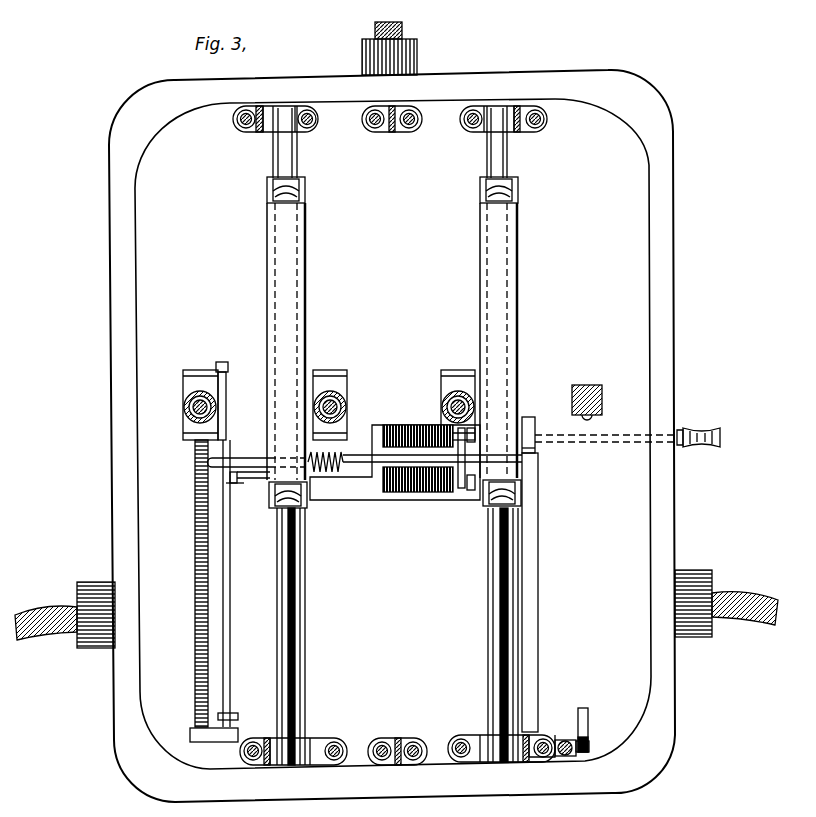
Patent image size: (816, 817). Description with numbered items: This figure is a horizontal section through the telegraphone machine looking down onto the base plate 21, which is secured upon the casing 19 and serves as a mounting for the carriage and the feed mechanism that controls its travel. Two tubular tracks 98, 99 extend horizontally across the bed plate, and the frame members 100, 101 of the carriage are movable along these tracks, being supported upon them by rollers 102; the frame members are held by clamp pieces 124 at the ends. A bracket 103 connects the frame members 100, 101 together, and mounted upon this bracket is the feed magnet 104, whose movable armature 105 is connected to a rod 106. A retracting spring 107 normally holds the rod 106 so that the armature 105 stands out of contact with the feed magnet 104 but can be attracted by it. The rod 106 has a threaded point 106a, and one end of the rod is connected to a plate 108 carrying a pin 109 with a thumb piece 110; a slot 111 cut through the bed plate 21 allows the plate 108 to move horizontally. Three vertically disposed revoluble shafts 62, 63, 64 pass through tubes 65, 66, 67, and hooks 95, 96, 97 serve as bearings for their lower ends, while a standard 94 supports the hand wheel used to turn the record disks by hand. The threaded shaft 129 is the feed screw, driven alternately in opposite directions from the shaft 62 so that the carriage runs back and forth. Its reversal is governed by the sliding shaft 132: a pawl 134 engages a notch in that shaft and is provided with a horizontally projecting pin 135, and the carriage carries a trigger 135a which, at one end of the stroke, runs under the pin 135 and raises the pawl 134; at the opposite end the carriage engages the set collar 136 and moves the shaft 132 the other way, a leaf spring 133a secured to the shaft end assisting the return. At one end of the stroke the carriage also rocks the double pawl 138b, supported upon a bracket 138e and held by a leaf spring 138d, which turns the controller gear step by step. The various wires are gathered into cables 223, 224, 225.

The casing 19 is at (675, 322).
The base plate 21 is at (640, 252).
The cable 225 is at (402, 30).
The cable 224 is at (50, 612).
The cable 223 is at (738, 598).
The clamp bracket 124 is at (265, 110).
The frame member 100 is at (300, 252).
The frame member 101 is at (482, 254).
The roller 102 is at (300, 172).
The tubular track 98 is at (277, 605).
The tubular track 99 is at (490, 632).
The hook 95 is at (186, 380).
The tube 65 is at (185, 410).
The revoluble shaft 62 is at (211, 406).
The leaf spring 133a is at (220, 365).
The hook 96 is at (340, 374).
The tube 66 is at (340, 398).
The revoluble shaft 63 is at (341, 408).
The hook 97 is at (458, 368).
The tube 67 is at (445, 395).
The revoluble shaft 64 is at (447, 405).
The standard 94 is at (587, 384).
The threaded point 106a is at (210, 464).
The trigger 135a is at (243, 470).
The pin 135 is at (234, 484).
The pawl 134 is at (222, 474).
The sliding shaft 132 is at (231, 566).
The threaded shaft 129 is at (196, 607).
The set collar 136 is at (236, 730).
The retracting spring 107 is at (330, 470).
The rod 106 is at (362, 464).
The bracket 103 is at (370, 500).
The feed magnet 104 is at (418, 493).
The movable armature 105 is at (461, 490).
The plate 108 is at (540, 455).
The pin 109 is at (657, 434).
The thumb piece 110 is at (710, 428).
The slot 111 is at (529, 546).
The double pawl 138b is at (585, 708).
The leaf spring 138d is at (576, 750).
The bracket 138e is at (582, 754).